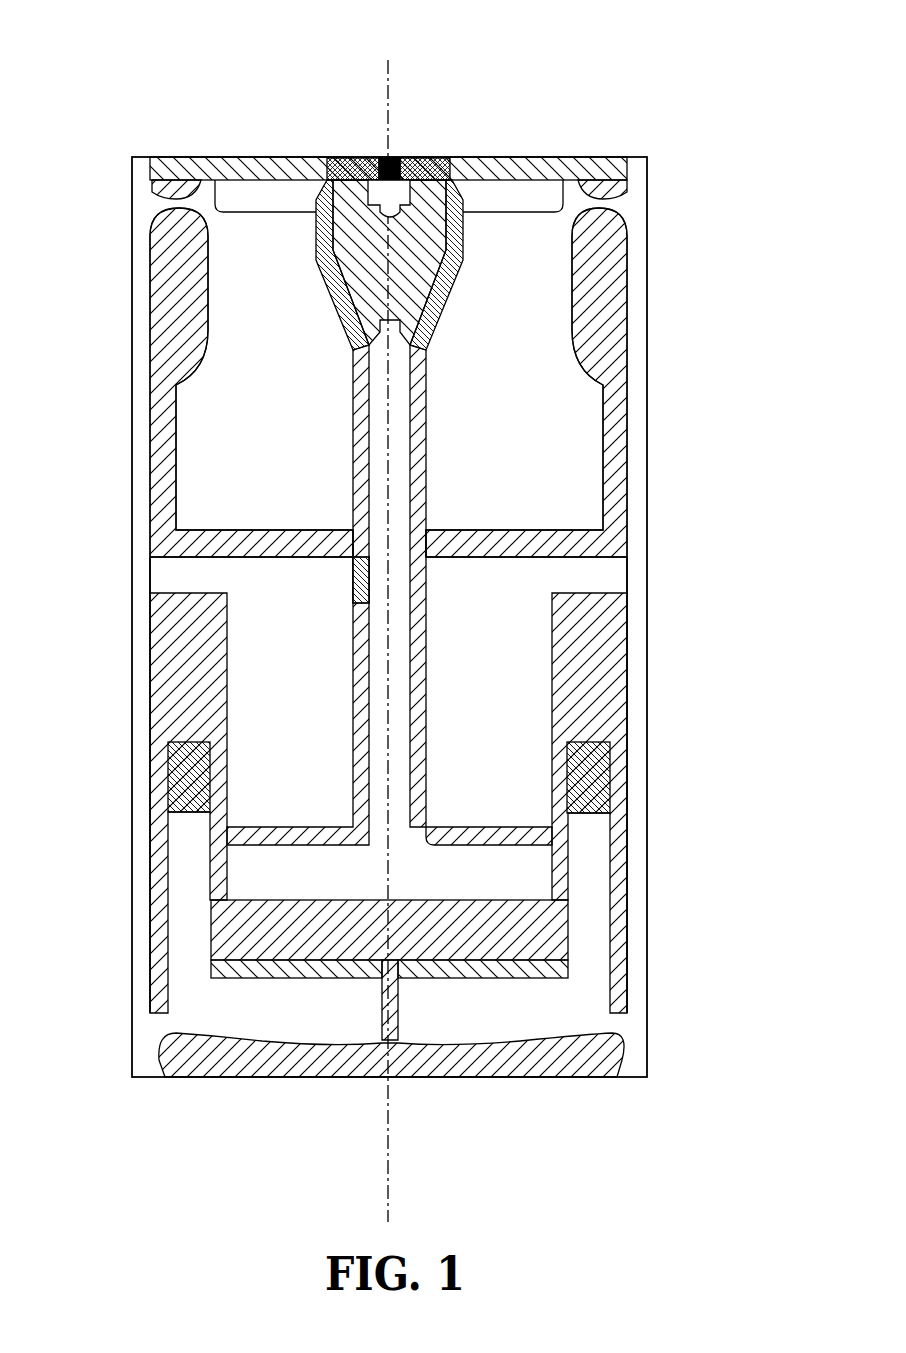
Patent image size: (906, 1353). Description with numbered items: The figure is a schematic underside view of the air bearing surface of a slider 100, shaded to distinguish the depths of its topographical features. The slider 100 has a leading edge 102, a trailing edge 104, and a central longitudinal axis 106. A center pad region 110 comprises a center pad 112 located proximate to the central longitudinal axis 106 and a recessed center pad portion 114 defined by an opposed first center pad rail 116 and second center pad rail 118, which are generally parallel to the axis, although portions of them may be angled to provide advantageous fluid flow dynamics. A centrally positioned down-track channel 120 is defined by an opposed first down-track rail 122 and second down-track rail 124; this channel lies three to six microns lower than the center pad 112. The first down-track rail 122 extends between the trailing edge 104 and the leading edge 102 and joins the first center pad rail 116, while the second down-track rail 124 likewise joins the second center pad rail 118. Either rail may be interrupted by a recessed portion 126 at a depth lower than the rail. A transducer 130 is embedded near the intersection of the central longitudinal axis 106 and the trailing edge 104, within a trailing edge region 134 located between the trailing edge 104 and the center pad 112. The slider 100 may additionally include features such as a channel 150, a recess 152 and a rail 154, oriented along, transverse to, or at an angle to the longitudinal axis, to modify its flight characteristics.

The slider 100 is at (680, 76).
The leading edge 102 is at (185, 1078).
The trailing edge 104 is at (185, 158).
The central longitudinal axis 106 is at (388, 1170).
The center pad region 110 is at (463, 282).
The center pad 112 is at (410, 158).
The recessed center pad portion 114 is at (340, 158).
The first center pad rail 116 is at (322, 233).
The second center pad rail 118 is at (462, 240).
The centrally positioned down-track channel 120 is at (398, 718).
The first down-track rail 122 is at (357, 665).
The second down-track rail 124 is at (425, 660).
The recessed portion 126 is at (357, 575).
The transducer 130 is at (370, 158).
The trailing edge region 134 is at (440, 158).
The channel 150 is at (607, 580).
The recess 152 is at (590, 772).
The rail 154 is at (548, 1080).